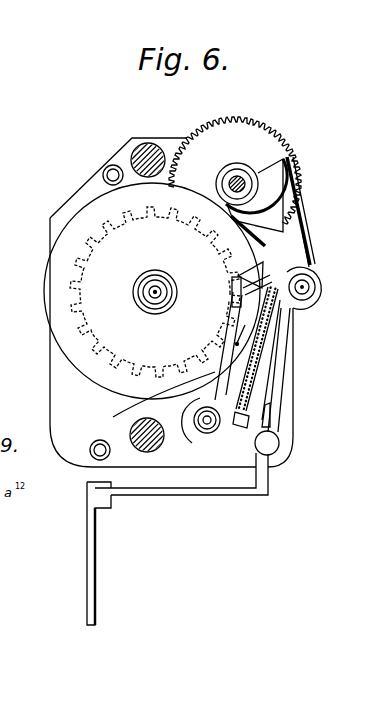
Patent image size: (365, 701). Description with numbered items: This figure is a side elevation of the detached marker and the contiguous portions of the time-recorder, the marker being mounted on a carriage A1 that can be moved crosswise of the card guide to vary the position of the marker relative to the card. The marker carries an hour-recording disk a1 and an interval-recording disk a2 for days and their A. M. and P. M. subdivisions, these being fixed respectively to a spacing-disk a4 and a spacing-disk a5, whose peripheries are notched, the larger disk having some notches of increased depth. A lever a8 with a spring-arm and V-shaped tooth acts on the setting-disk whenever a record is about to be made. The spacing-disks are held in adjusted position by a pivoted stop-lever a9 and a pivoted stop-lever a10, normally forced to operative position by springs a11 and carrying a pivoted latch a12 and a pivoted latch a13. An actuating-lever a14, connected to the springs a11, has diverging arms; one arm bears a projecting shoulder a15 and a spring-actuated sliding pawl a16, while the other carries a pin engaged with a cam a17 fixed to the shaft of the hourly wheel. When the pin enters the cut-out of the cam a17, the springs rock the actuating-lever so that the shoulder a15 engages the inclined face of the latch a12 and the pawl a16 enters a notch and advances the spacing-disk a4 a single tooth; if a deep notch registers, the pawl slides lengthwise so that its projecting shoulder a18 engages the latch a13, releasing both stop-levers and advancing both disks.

The carriage A1 is at (58, 388).
The hour-recording disk a1 is at (236, 131).
The interval-recording disk a2 is at (52, 279).
The spacing-disk a4 is at (70, 300).
The spacing-disk a5 is at (143, 328).
The lever a8 is at (236, 493).
The stop-lever a9 is at (201, 425).
The stop-lever a10 is at (162, 402).
The springs a11 is at (260, 372).
The latch a12 is at (287, 280).
The latch a13 is at (268, 272).
The actuating-lever a14 is at (295, 247).
The projecting shoulder a15 is at (268, 277).
The sliding pawl a16 is at (248, 262).
The cam a17 is at (248, 233).
The projecting shoulder a18 is at (262, 177).